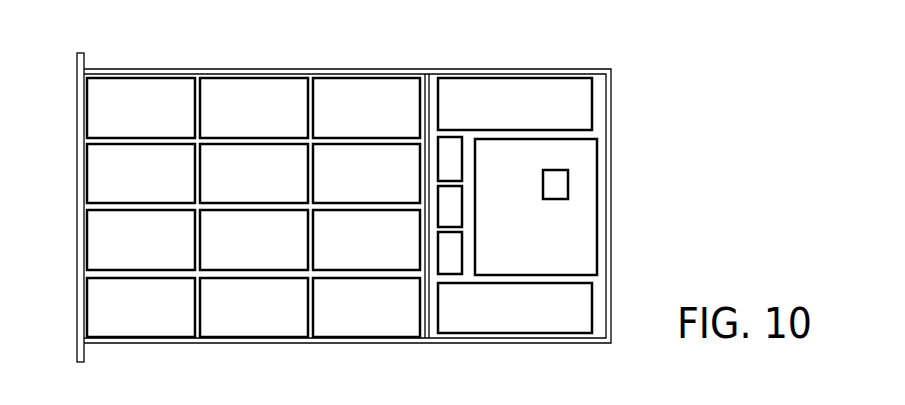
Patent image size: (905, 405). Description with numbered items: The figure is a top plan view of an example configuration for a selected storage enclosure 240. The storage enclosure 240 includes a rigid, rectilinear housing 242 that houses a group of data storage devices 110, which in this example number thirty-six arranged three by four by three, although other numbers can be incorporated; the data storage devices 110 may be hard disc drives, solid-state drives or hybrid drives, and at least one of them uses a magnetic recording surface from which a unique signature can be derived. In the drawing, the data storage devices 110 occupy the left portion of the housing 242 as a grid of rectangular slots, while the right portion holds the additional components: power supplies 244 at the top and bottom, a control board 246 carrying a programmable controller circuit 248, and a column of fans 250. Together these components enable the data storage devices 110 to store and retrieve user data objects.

The storage enclosure 240 is at (750, 92).
The housing 242 is at (340, 70).
The data storage device 110 is at (255, 92).
The power supply 244 is at (532, 88).
The control board 246 is at (570, 233).
The programmable controller circuit 248 is at (568, 185).
The fan 250 is at (447, 149).